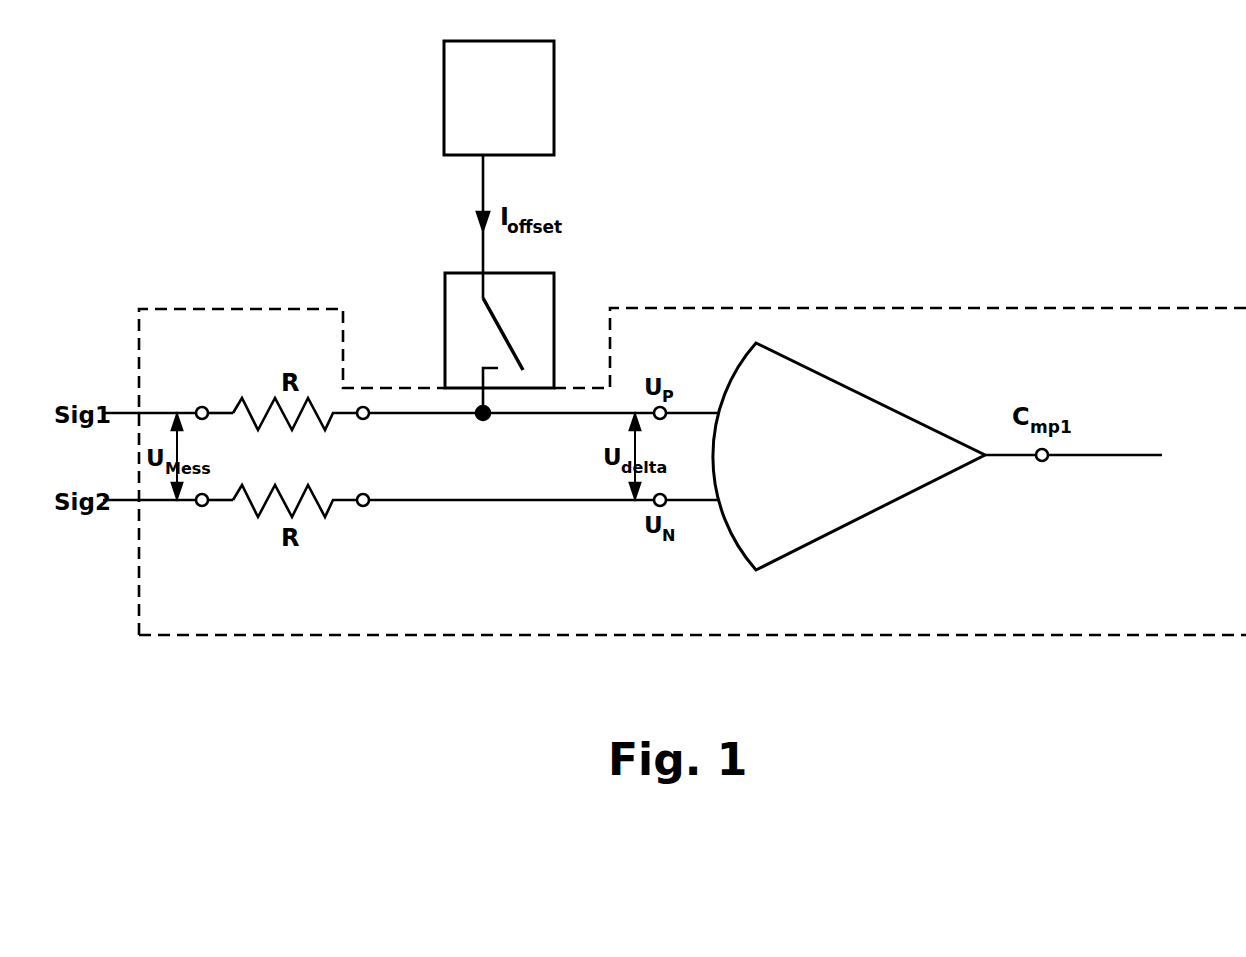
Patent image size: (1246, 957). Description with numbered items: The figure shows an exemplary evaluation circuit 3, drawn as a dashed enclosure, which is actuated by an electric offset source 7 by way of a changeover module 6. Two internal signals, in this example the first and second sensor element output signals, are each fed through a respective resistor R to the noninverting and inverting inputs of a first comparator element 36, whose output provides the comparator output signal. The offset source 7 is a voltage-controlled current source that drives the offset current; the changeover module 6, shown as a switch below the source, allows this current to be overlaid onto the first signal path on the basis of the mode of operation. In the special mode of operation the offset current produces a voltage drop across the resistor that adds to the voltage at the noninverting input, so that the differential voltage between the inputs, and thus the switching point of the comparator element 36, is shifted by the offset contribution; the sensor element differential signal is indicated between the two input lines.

The evaluation circuit 3 is at (983, 640).
The changeover module 6 is at (445, 330).
The electric offset source 7 is at (444, 92).
The first comparator element 36 is at (826, 373).